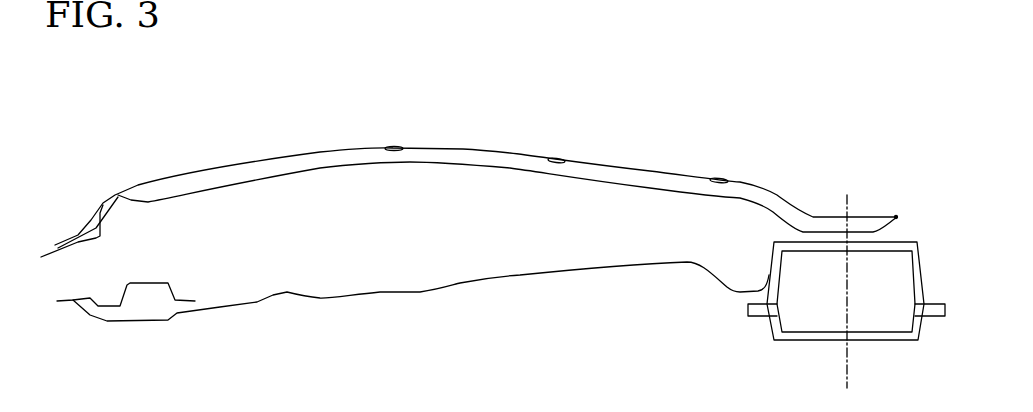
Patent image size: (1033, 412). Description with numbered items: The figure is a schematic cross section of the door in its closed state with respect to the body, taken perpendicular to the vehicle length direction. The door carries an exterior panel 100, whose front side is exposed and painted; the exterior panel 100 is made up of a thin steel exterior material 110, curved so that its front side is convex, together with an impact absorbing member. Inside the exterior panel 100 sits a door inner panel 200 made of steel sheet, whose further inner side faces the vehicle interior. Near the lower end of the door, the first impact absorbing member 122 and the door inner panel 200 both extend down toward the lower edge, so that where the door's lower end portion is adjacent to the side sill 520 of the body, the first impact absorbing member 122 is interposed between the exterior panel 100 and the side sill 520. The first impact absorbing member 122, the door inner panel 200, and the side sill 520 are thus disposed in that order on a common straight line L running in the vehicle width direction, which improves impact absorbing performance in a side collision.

The exterior panel 100 is at (469, 165).
The exterior material 110 is at (642, 170).
The first impact absorbing member 122 is at (580, 178).
The door inner panel 200 is at (502, 280).
The side sill 520 is at (905, 243).
The straight line L is at (848, 372).